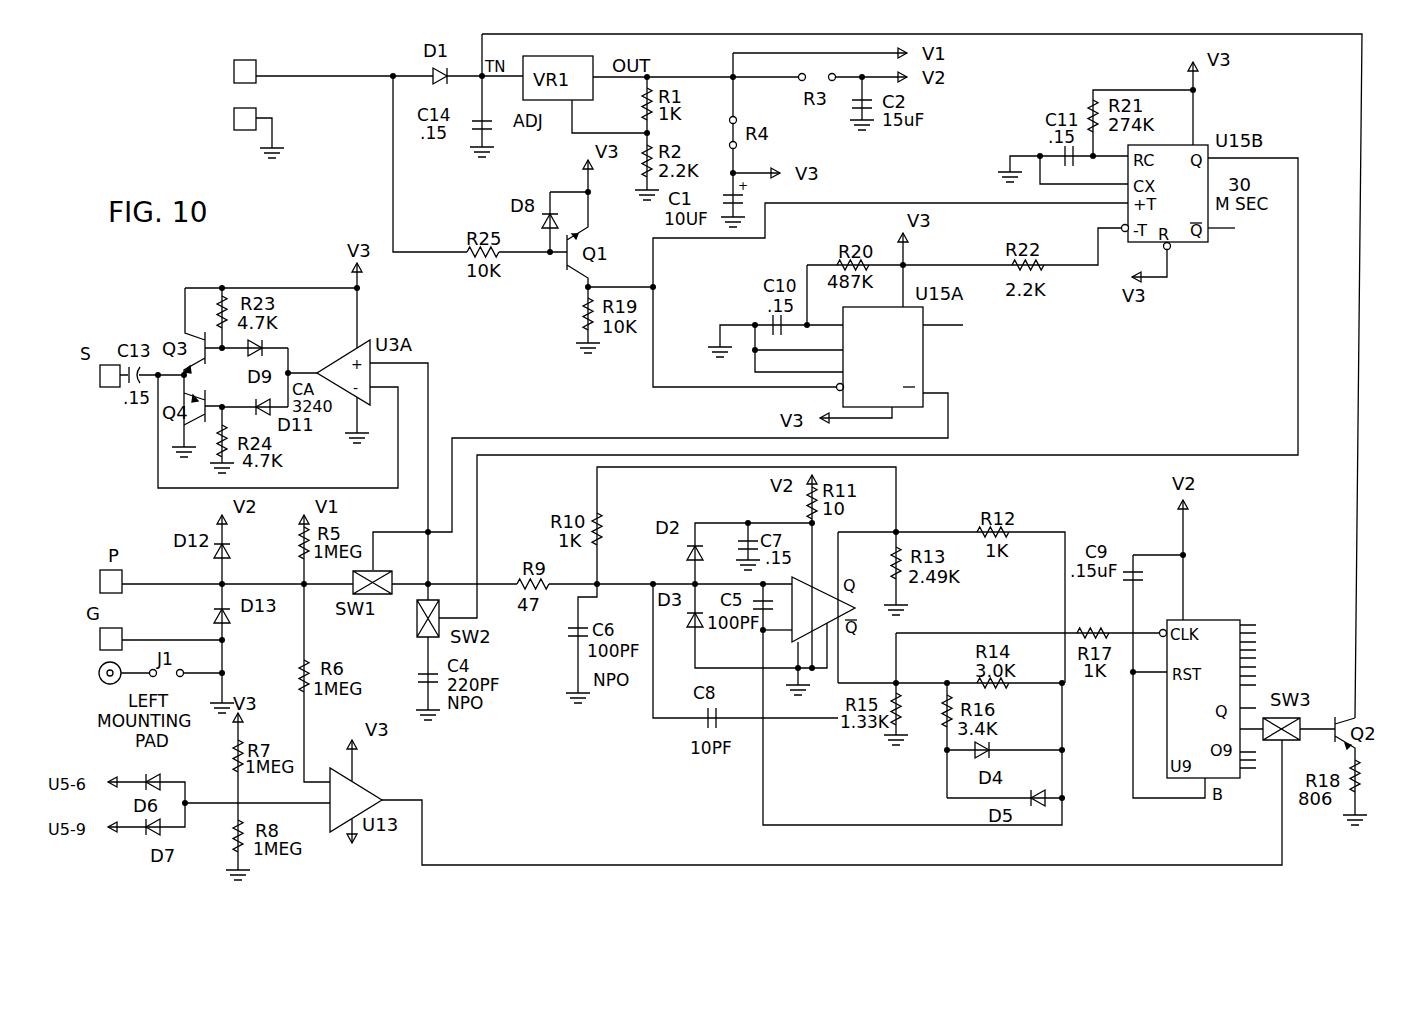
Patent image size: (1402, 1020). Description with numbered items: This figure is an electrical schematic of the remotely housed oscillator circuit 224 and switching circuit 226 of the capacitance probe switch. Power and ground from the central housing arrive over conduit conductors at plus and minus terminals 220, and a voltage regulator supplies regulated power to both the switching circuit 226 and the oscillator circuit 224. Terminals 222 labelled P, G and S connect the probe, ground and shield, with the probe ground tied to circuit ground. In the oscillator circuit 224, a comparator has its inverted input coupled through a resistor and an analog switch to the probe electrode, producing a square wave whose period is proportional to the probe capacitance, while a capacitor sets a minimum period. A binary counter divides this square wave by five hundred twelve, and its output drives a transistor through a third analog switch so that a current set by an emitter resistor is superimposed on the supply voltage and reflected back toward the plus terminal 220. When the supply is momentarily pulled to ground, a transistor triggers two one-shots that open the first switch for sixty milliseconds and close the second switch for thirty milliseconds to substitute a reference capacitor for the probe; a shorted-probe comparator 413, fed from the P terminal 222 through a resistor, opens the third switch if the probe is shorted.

The plus and minus terminals 220 is at (232, 113).
The terminals 222 is at (108, 388).
The oscillator circuit 224 is at (589, 733).
The switching circuit 226 is at (996, 362).
The comparator 413 is at (360, 786).